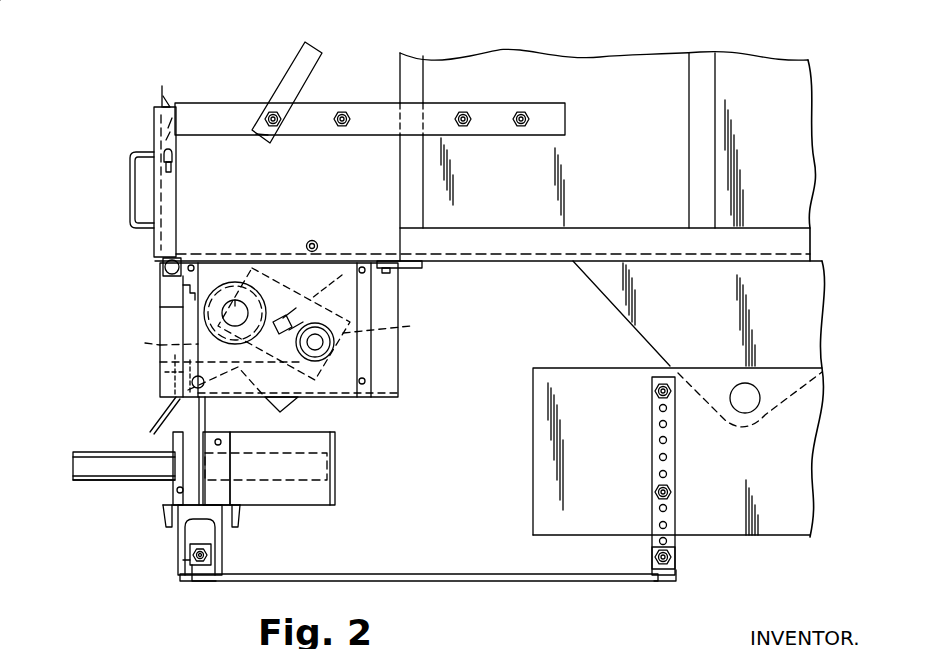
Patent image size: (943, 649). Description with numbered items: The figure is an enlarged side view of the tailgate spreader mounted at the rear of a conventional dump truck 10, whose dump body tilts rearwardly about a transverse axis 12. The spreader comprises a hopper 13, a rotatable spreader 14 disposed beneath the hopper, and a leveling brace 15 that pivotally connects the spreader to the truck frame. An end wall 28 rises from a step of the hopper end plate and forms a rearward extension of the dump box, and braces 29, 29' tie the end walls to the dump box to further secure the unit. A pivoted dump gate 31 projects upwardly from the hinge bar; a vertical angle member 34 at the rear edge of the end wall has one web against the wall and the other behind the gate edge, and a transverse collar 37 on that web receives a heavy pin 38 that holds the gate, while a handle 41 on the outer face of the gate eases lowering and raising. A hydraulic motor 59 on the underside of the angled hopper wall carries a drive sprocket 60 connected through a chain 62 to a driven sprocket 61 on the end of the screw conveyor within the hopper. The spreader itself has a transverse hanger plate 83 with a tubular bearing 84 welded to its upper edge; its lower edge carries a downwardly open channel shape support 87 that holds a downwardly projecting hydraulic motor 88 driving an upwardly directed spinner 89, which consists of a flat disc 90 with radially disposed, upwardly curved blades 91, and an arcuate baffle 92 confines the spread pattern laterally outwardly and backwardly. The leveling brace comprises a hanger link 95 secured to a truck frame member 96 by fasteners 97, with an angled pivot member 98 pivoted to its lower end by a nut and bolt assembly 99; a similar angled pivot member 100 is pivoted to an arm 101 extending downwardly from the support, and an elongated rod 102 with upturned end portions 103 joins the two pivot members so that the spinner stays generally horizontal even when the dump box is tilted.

The dump truck 10 is at (835, 163).
The transverse axis 12 is at (750, 398).
The hopper 13 is at (100, 300).
The rotatable spreader 14 is at (135, 590).
The leveling brace 15 is at (700, 588).
The end wall 28 is at (215, 112).
The brace 29 is at (307, 77).
The brace 29' is at (484, 95).
The dump gate 31 is at (162, 88).
The vertical angle member 34 is at (154, 128).
The transverse collar 37 is at (172, 152).
The heavy pin 38 is at (172, 166).
The handle 41 is at (130, 195).
The hydraulic motor 59 is at (393, 330).
The drive sprocket 60 is at (333, 345).
The driven sprocket 61 is at (236, 282).
The chain 62 is at (275, 303).
The hanger plate 83 is at (196, 415).
The tubular bearing 84 is at (121, 345).
The channel shape support 87 is at (240, 510).
The hydraulic motor 88 is at (180, 555).
The spinner 89 is at (125, 480).
The flat disc 90 is at (97, 478).
The blade 91 is at (147, 440).
The arcuate baffle 92 is at (320, 445).
The hanger link 95 is at (676, 462).
The truck frame member 96 is at (583, 378).
The nut 97 is at (665, 380).
The angled pivot member 98 is at (677, 559).
The nut and bolt assembly 99 is at (652, 559).
The angled pivot member 100 is at (185, 560).
The arm 101 is at (208, 540).
The elongated rod 102 is at (460, 576).
The upturned end portion 103 is at (192, 578).